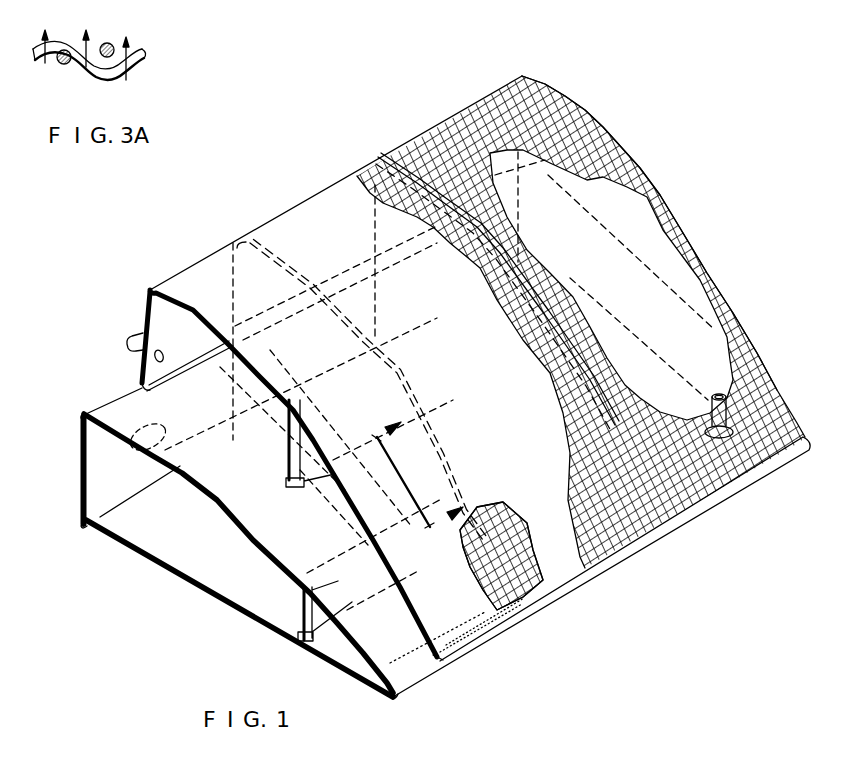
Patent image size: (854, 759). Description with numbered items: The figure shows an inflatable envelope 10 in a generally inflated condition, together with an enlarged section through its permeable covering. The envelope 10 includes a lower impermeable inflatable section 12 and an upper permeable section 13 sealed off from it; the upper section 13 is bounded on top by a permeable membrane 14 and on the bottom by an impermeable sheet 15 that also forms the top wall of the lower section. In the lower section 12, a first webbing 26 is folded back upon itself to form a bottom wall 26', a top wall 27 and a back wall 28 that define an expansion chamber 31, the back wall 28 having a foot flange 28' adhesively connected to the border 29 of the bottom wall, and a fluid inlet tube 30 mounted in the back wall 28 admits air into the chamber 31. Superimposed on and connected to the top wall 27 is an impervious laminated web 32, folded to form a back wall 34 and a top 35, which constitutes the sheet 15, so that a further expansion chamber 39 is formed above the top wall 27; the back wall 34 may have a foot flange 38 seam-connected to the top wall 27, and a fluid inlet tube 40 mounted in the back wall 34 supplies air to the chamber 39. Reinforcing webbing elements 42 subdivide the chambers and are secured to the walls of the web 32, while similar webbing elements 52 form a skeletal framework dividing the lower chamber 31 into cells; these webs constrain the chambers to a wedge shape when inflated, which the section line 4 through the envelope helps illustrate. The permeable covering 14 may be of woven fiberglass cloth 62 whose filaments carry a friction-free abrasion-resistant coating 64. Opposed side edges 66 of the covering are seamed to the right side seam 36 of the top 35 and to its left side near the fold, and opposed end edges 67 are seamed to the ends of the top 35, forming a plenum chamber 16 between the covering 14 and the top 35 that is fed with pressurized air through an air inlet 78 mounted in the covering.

In FIG. 1, the envelope 10 is at (742, 267).
In FIG. 1, the lower impermeable inflatable section 12 is at (112, 392).
In FIG. 1, the upper permeable section 13 is at (507, 300).
In FIG. 1, the permeable membrane 14 is at (582, 180).
In FIG. 1, the impermeable sheet 15 is at (378, 550).
In FIG. 1, the plenum chamber 16 is at (660, 234).
In FIG. 1, the first webbing 26 is at (238, 555).
In FIG. 1, the bottom wall 26' is at (212, 546).
In FIG. 1, the top wall 27 is at (268, 509).
In FIG. 1, the back wall 28 is at (100, 469).
In FIG. 1, the foot flange 28' is at (140, 501).
In FIG. 1, the border 29 is at (90, 530).
In FIG. 1, the fluid inlet tube 30 is at (170, 423).
In FIG. 1, the expansion chamber 31 is at (255, 594).
In FIG. 1, the impervious laminated web 32 is at (207, 273).
In FIG. 1, the back wall 34 is at (182, 342).
In FIG. 1, the top 35 is at (372, 428).
In FIG. 1, the right side seam 36 is at (463, 630).
In FIG. 1, the foot flange 38 is at (180, 367).
In FIG. 1, the further expansion chamber 39 is at (328, 488).
In FIG. 1, the fluid inlet tube 40 is at (125, 332).
In FIG. 1, the reinforcing webbing elements 42 is at (287, 263).
In FIG. 1, the section line 4 is at (417, 475).
In FIG. 1, the webbing elements 52 is at (272, 460).
In FIG. 3A, the woven fiberglass cloth 62 is at (114, 46).
In FIG. 3A, the abrasion-resistant coating 64 is at (141, 60).
In FIG. 1, the side edges 66 is at (445, 120).
In FIG. 1, the end edges 67 is at (603, 128).
In FIG. 1, the air inlet 78 is at (712, 415).